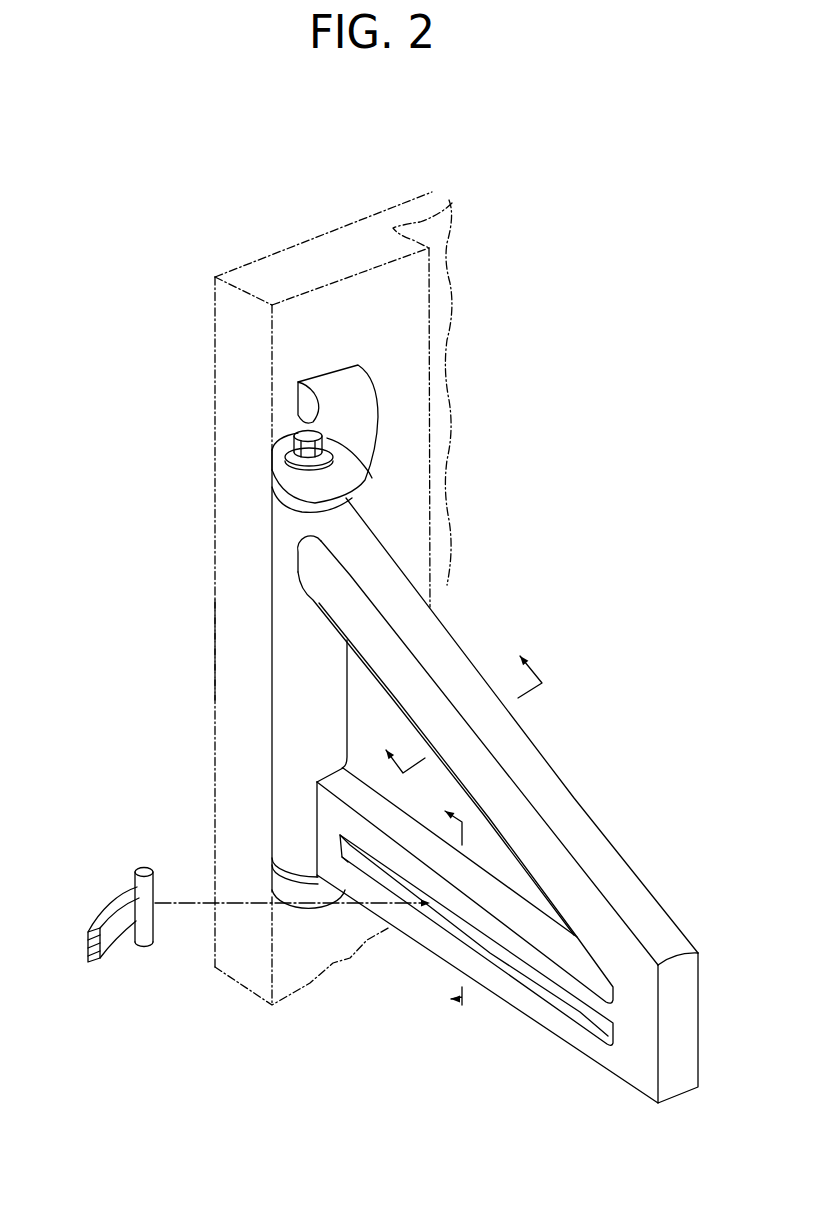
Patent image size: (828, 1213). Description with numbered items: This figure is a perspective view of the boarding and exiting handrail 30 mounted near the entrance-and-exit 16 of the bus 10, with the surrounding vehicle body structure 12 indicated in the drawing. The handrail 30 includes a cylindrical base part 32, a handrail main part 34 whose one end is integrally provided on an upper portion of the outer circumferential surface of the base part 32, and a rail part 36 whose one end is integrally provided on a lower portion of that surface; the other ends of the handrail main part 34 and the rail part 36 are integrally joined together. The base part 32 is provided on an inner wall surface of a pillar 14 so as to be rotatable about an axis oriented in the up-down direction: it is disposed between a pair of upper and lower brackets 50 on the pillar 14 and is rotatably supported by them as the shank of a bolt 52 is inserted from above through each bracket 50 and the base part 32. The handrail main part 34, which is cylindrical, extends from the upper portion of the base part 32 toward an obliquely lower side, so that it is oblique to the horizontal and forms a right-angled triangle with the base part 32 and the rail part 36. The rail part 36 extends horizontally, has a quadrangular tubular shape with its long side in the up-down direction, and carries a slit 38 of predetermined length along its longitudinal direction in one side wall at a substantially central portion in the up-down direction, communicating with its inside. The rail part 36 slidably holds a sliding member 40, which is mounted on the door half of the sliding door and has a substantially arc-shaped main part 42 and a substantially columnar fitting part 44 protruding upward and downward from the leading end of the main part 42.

The bus 10 is at (533, 262).
The door 12 is at (275, 248).
The pillar 14 is at (417, 506).
The entrance-and-exit 16 is at (232, 577).
The boarding and exiting handrail 30 is at (605, 805).
The base part 32 is at (303, 692).
The handrail main part 34 is at (518, 760).
The rail part 36 is at (533, 1008).
The slit 38 is at (578, 1007).
The sliding member 40 is at (128, 953).
The main part 42 is at (103, 912).
The fitting part 44 is at (153, 937).
The brackets 50 is at (355, 418).
The bolt 52 is at (310, 437).